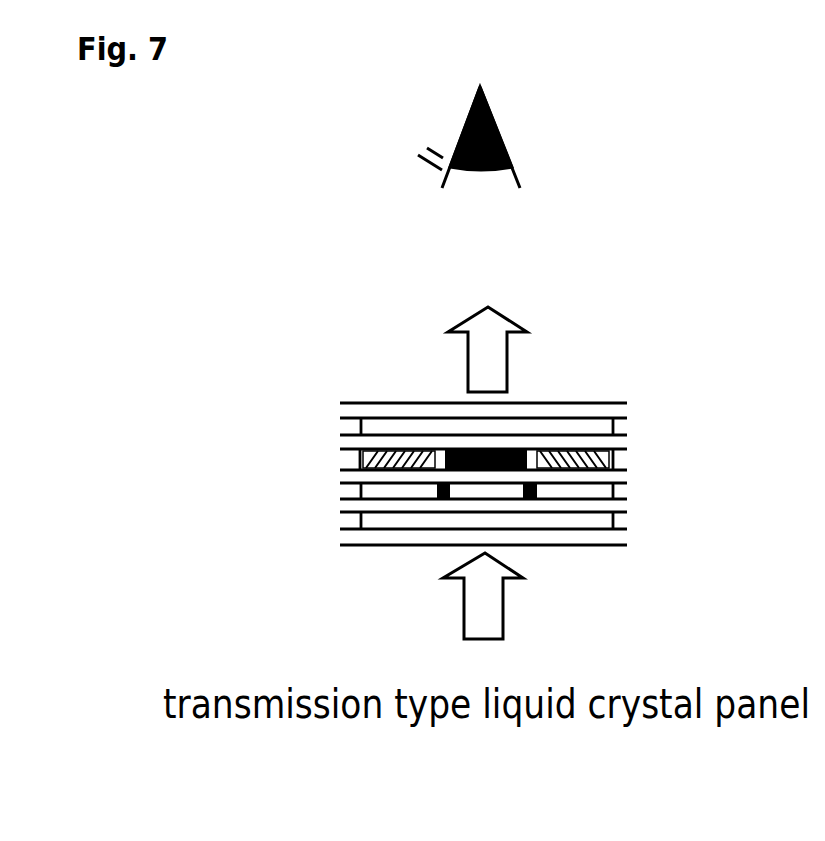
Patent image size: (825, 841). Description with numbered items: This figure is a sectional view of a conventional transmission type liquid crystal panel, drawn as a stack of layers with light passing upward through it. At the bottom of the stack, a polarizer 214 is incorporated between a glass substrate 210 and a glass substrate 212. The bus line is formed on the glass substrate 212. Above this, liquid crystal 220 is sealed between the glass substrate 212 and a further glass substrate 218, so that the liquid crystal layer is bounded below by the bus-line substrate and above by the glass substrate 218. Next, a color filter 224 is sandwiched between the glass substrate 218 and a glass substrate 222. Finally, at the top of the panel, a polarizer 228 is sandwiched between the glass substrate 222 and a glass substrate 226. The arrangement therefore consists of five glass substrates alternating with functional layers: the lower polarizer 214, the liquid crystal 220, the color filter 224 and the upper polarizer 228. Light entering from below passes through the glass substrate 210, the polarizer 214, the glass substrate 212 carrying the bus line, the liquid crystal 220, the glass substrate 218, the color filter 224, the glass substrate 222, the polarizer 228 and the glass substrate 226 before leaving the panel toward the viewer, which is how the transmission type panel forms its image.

The glass substrate 210 is at (603, 541).
The glass substrate 212 is at (613, 508).
The polarizer 214 is at (361, 519).
The glass substrate 218 is at (613, 477).
The liquid crystal 220 is at (361, 490).
The glass substrate 222 is at (613, 446).
The color filter 224 is at (361, 458).
The glass substrate 226 is at (613, 413).
The polarizer 228 is at (361, 425).